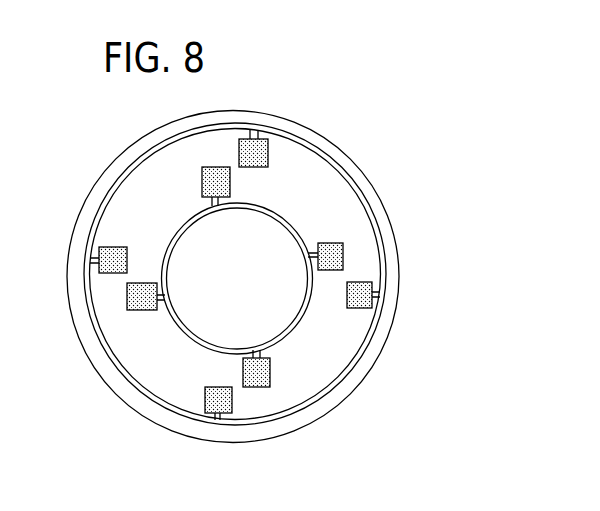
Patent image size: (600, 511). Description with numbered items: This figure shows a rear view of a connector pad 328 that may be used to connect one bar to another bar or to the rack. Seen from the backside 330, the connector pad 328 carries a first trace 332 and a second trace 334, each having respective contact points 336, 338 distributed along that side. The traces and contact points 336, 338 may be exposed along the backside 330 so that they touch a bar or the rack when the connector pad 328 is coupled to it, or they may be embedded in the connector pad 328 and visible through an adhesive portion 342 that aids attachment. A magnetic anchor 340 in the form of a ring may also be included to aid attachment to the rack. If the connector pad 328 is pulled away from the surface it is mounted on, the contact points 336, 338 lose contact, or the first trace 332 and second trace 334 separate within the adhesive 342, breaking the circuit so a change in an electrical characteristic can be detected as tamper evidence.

The connector pad 328 is at (366, 100).
The backside 330 is at (392, 127).
The first trace 332 is at (140, 397).
The second trace 334 is at (288, 331).
The contact points 336 is at (268, 163).
The contact points 338 is at (270, 378).
The magnetic anchor 340 is at (87, 205).
The adhesive portion 342 is at (197, 230).